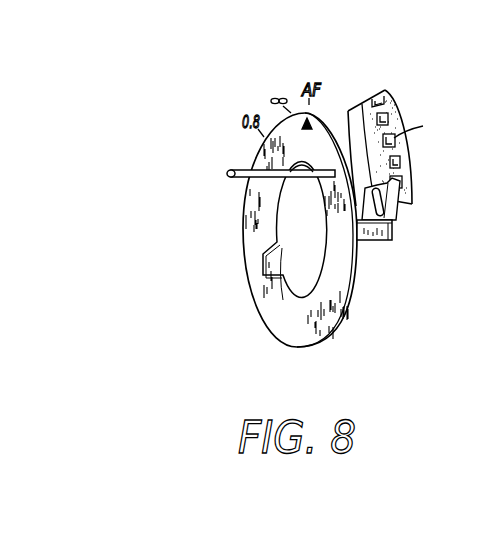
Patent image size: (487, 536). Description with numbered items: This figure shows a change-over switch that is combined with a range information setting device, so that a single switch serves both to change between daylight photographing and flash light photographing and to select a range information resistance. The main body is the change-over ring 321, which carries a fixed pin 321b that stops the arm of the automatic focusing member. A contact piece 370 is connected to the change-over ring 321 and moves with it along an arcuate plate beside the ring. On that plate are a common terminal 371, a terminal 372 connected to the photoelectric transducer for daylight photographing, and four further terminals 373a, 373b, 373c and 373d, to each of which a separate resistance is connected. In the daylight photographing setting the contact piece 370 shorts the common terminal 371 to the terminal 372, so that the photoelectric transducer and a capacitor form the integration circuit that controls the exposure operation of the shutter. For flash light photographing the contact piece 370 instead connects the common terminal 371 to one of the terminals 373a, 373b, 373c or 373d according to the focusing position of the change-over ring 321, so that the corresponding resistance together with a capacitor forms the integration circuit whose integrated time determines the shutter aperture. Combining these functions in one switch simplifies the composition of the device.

The change-over ring 321 is at (340, 287).
The fixed pin 321b is at (242, 178).
The contact piece 370 is at (398, 203).
The common terminal 371 is at (353, 110).
The terminal 372 is at (402, 183).
The terminal 373a is at (400, 163).
The terminal 373b is at (427, 134).
The terminal 373c is at (386, 118).
The terminal 373d is at (380, 98).